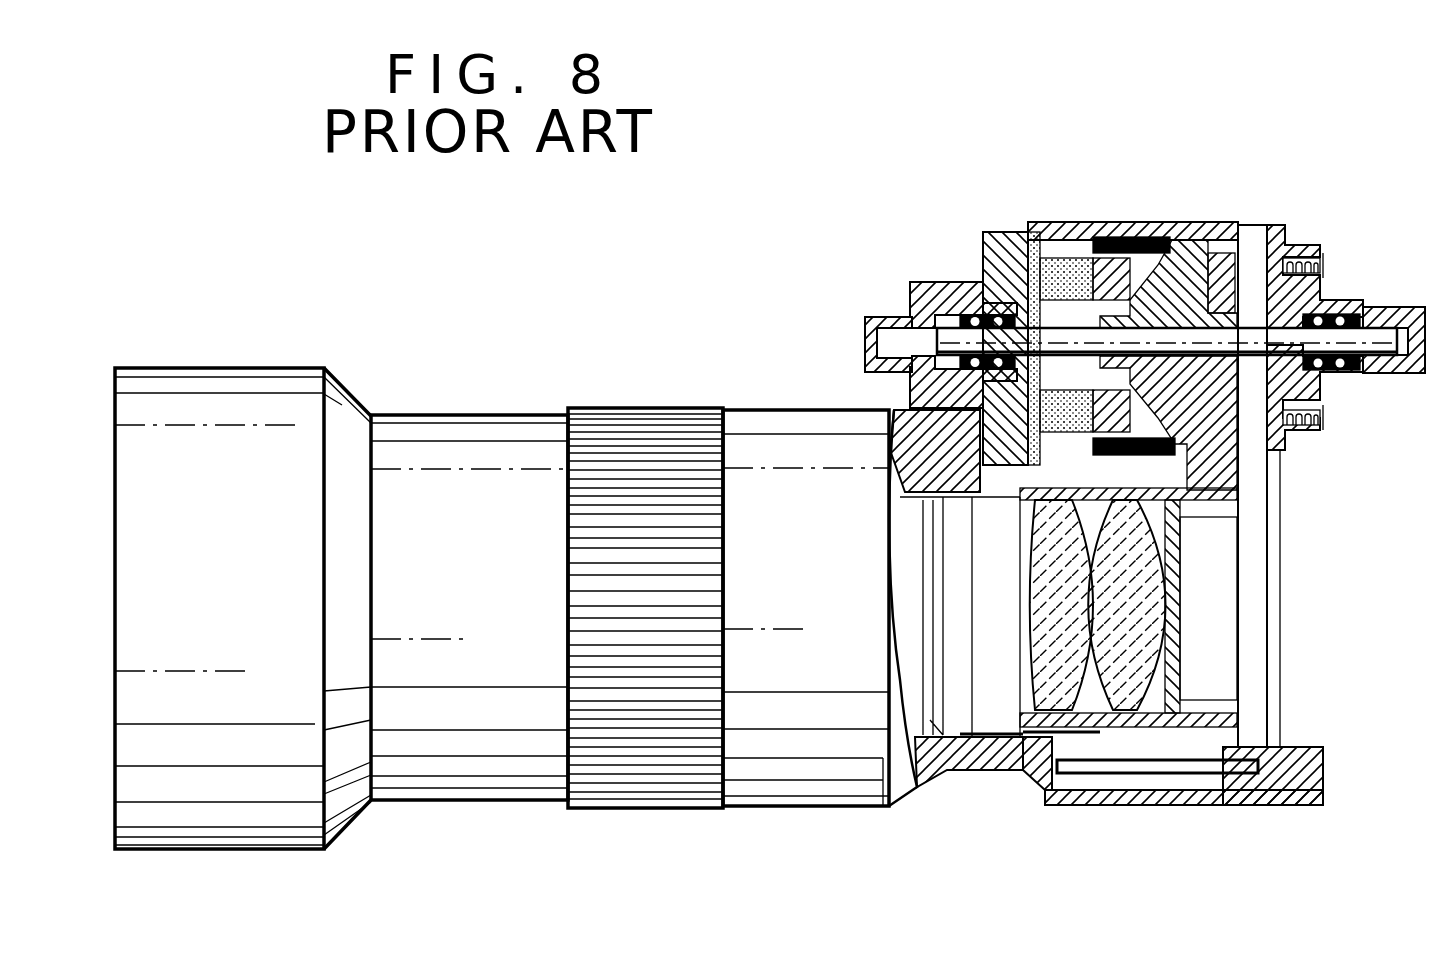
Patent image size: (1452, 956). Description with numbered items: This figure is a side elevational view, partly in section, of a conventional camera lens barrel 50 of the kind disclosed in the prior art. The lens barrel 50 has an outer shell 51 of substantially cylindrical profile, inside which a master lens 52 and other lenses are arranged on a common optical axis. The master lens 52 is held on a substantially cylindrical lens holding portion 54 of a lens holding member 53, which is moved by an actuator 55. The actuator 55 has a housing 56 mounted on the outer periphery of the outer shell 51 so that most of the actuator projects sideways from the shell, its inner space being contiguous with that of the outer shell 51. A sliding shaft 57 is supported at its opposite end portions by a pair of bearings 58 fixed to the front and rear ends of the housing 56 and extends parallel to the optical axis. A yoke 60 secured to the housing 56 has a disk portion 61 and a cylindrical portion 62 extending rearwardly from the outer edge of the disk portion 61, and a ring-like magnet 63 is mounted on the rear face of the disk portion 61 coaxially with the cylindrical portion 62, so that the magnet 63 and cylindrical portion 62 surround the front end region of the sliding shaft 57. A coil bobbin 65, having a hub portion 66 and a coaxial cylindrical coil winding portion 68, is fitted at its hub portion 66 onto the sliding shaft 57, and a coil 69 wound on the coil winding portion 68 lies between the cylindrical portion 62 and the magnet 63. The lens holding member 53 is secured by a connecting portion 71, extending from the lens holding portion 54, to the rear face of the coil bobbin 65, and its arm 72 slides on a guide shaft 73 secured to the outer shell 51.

The lens barrel 50 is at (385, 343).
The outer shell 51 is at (757, 408).
The master lens 52 is at (1160, 605).
The lens holding member 53 is at (1228, 502).
The lens holding portion 54 is at (1023, 777).
The actuator 55 is at (985, 232).
The housing 56 is at (983, 270).
The sliding shaft 57 is at (880, 343).
The bearings 58 is at (910, 303).
The yoke 60 is at (1090, 258).
The disk portion 61 is at (1012, 232).
The cylindrical portion 62 is at (1120, 237).
The magnet 63 is at (1048, 255).
The coil bobbin 65 is at (1208, 222).
The hub portion 66 is at (1110, 372).
The coil winding portion 68 is at (1160, 442).
The coil 69 is at (1170, 222).
The connecting portion 71 is at (1250, 280).
The arm 72 is at (1197, 743).
The guide shaft 73 is at (1160, 806).